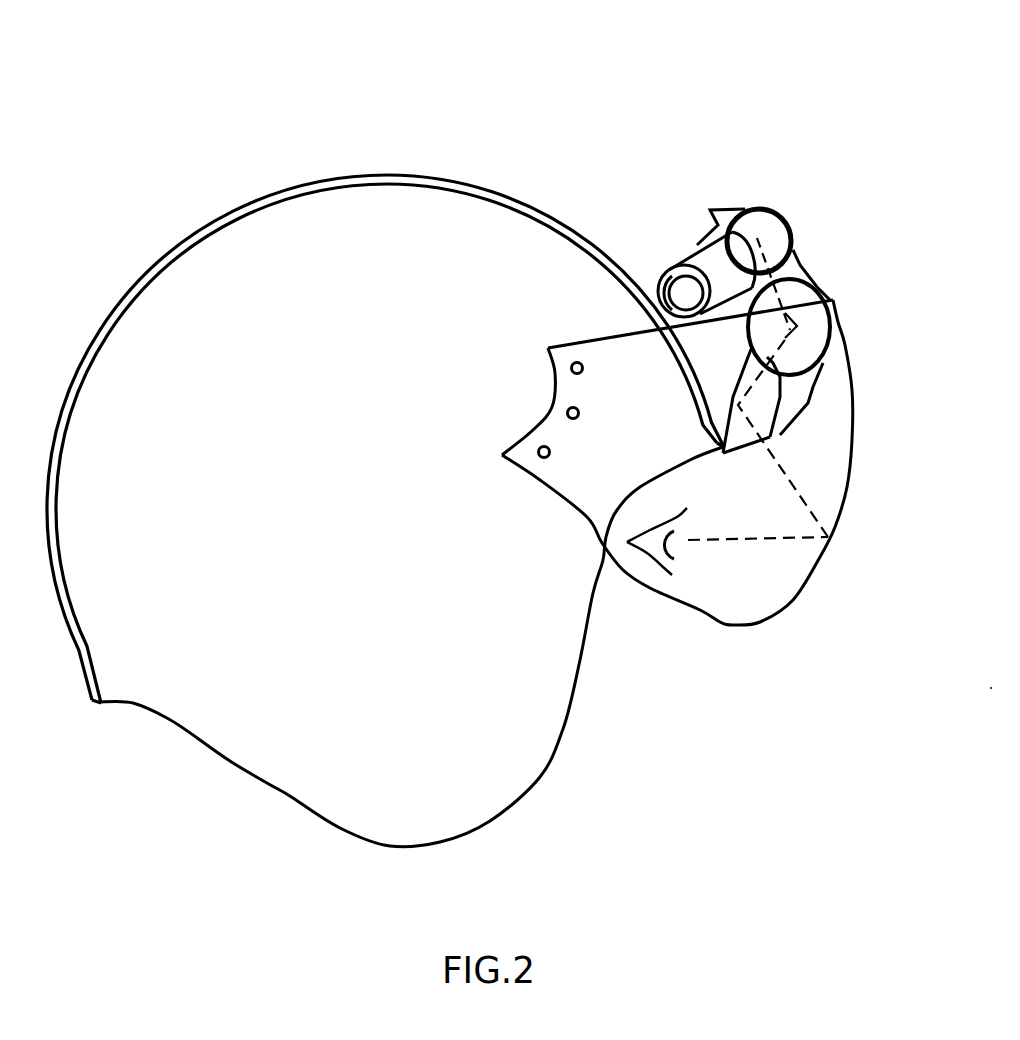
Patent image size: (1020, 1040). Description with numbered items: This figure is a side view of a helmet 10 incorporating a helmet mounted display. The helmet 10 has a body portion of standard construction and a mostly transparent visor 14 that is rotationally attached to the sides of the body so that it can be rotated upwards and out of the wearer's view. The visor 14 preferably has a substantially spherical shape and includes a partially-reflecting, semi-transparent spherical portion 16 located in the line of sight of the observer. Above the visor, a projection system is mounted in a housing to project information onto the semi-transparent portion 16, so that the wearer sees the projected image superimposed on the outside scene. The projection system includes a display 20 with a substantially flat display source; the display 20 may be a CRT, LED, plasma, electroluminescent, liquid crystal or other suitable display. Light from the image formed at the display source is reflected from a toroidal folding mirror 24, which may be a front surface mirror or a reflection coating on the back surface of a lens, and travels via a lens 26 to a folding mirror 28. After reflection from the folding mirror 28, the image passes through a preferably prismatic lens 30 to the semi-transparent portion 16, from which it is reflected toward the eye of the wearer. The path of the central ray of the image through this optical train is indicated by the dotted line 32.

The helmet 10 is at (560, 134).
The visor 14 is at (733, 627).
The partially-reflecting semi-transparent spherical portion 16 is at (832, 547).
The display 20 is at (712, 267).
The toroidal folding mirror 24 is at (767, 228).
The lens 26 is at (765, 297).
The folding mirror 28 is at (810, 318).
The prismatic lens 30 is at (758, 408).
The dotted line 32 is at (802, 493).